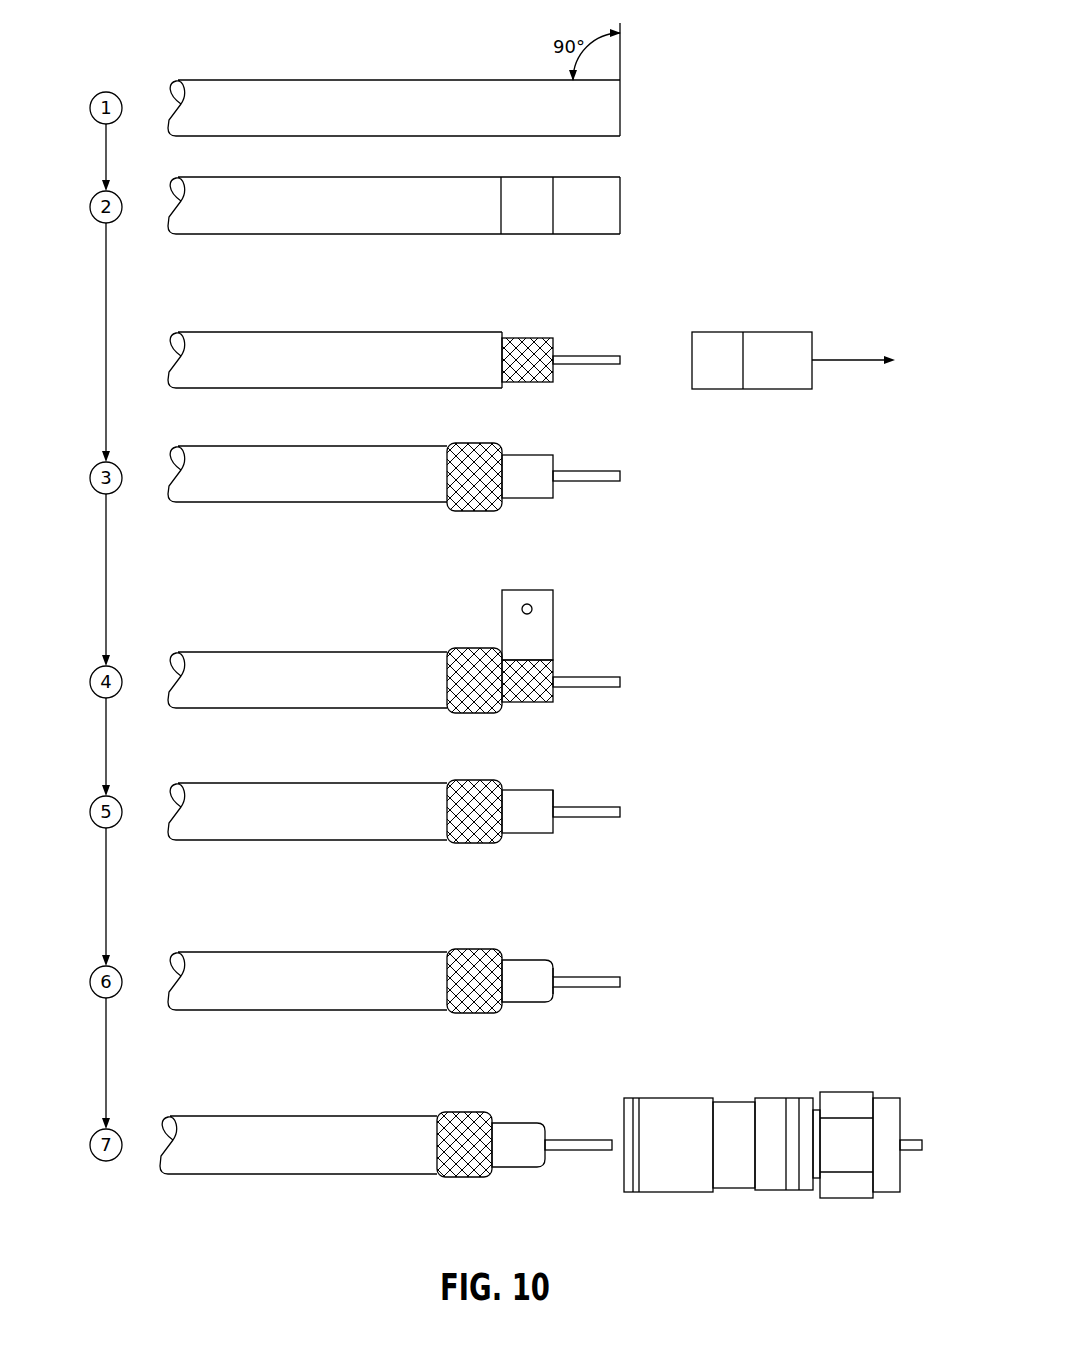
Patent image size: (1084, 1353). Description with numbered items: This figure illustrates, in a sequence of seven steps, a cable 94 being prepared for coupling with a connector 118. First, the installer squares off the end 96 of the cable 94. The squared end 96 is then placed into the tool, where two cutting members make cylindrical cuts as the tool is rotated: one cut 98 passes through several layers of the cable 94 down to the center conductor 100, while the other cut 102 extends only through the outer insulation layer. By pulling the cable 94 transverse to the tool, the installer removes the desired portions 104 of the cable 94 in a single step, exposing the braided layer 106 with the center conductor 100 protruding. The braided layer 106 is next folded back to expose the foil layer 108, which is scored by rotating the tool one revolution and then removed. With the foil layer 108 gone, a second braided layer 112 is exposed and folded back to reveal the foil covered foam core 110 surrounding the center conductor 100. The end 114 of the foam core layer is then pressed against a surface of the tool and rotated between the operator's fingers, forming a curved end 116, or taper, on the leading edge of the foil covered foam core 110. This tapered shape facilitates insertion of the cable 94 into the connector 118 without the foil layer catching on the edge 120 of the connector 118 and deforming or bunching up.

The cable 94 is at (306, 80).
The end 96 is at (621, 90).
The cut 98 is at (553, 218).
The center conductor 100 is at (588, 353).
The cut 102 is at (500, 220).
The desired portions 104 is at (778, 332).
The braided layer 106 is at (528, 338).
The foil layer 108 is at (527, 453).
The foil covered foam core 110 is at (530, 833).
The second braided layer 112 is at (470, 780).
The end of the foam core layer 114 is at (553, 800).
The curved end 116 is at (555, 1000).
The connector 118 is at (677, 1193).
The edge 120 is at (623, 1108).